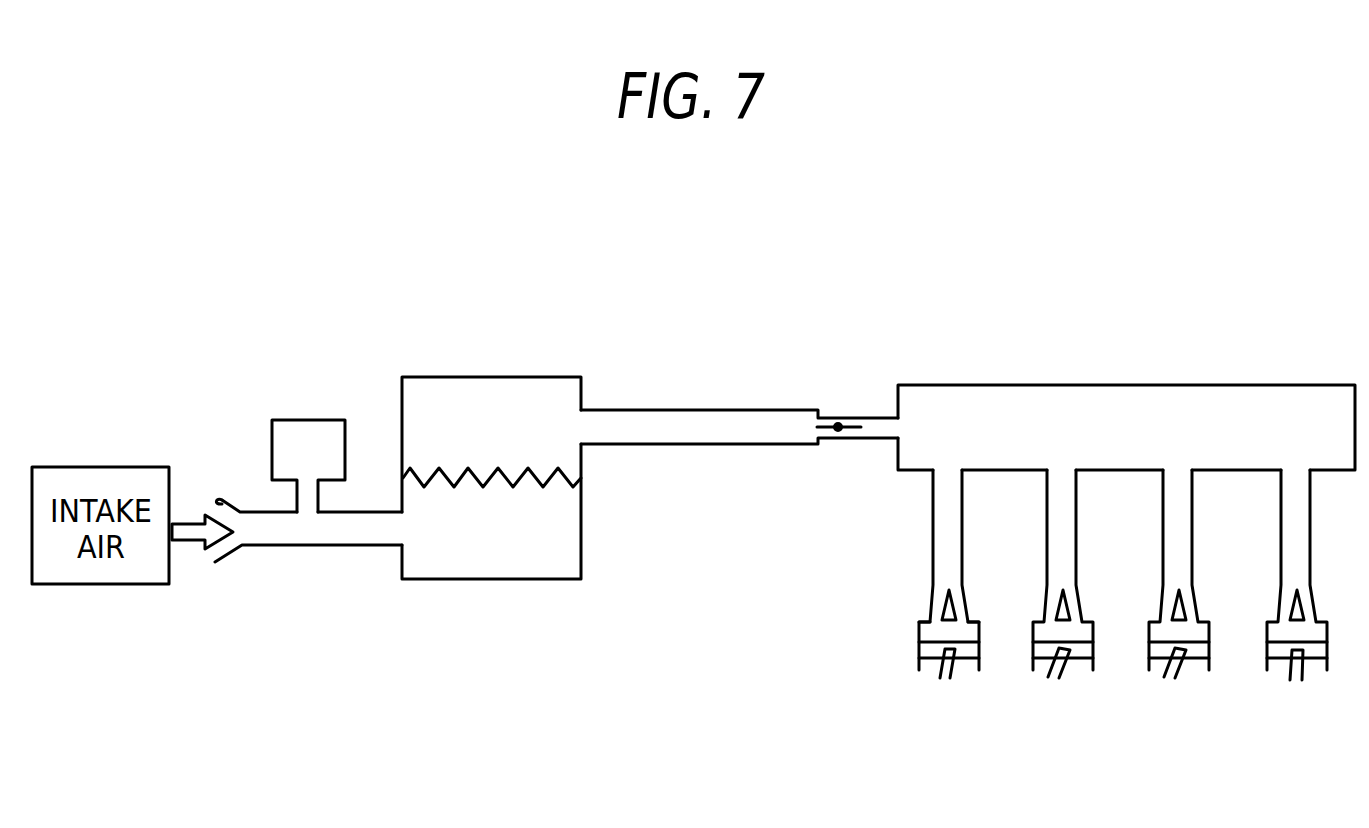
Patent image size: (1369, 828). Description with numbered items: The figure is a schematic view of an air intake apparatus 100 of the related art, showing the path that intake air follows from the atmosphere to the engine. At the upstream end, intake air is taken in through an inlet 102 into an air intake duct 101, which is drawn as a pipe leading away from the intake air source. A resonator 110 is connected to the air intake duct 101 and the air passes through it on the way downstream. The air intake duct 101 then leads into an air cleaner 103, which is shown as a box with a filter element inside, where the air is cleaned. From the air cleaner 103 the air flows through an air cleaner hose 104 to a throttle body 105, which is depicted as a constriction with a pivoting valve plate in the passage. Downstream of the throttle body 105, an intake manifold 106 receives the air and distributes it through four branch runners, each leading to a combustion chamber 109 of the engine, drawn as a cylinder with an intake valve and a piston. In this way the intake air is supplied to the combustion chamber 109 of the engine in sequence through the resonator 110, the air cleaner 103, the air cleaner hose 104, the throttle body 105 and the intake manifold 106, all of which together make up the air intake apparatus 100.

The air intake apparatus 100 is at (1035, 304).
The air intake duct 101 is at (308, 547).
The inlet 102 is at (222, 502).
The air cleaner 103 is at (495, 377).
The air cleaner hose 104 is at (692, 446).
The throttle body 105 is at (857, 418).
The intake manifold 106 is at (1127, 385).
The combustion chamber 109 is at (908, 638).
The resonator 110 is at (308, 419).